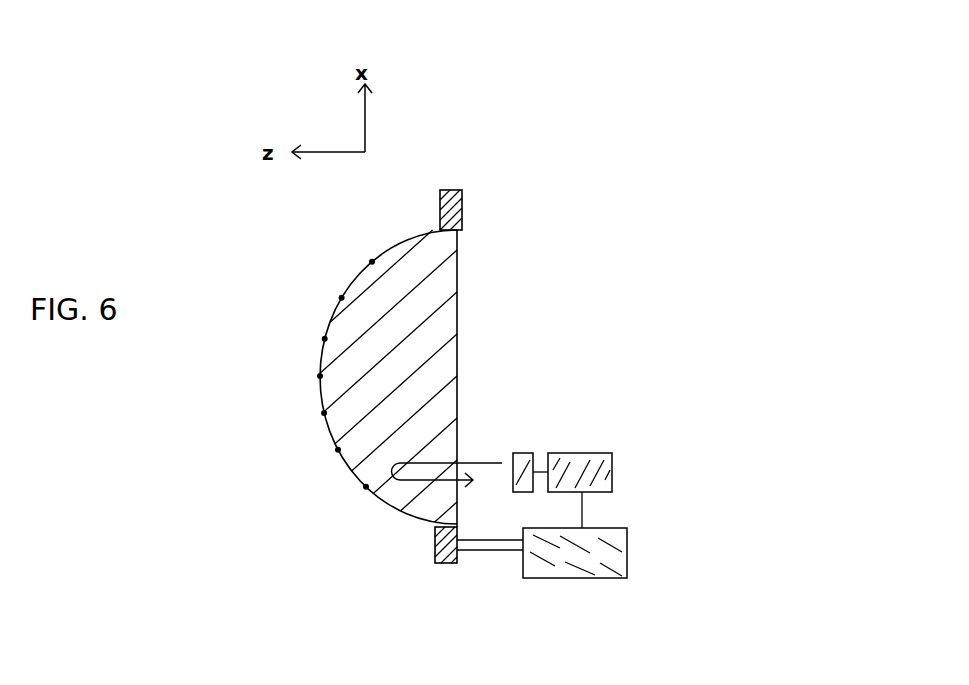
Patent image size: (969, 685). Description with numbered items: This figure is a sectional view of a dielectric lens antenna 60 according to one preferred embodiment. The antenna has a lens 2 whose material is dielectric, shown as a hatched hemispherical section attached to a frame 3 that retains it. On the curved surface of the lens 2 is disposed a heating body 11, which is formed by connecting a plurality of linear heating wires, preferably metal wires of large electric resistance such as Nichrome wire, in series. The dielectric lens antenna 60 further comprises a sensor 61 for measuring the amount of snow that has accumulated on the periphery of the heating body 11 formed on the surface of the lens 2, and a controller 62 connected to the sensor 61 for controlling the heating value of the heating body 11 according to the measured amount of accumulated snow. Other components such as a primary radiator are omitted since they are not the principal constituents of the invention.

The dielectric lens antenna 60 is at (432, 88).
The lens 2 is at (368, 333).
The heating body 11 is at (323, 338).
The frame 3 is at (452, 189).
The sensor 61 is at (572, 466).
The controller 62 is at (612, 547).